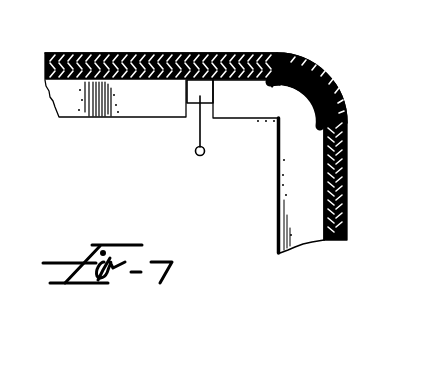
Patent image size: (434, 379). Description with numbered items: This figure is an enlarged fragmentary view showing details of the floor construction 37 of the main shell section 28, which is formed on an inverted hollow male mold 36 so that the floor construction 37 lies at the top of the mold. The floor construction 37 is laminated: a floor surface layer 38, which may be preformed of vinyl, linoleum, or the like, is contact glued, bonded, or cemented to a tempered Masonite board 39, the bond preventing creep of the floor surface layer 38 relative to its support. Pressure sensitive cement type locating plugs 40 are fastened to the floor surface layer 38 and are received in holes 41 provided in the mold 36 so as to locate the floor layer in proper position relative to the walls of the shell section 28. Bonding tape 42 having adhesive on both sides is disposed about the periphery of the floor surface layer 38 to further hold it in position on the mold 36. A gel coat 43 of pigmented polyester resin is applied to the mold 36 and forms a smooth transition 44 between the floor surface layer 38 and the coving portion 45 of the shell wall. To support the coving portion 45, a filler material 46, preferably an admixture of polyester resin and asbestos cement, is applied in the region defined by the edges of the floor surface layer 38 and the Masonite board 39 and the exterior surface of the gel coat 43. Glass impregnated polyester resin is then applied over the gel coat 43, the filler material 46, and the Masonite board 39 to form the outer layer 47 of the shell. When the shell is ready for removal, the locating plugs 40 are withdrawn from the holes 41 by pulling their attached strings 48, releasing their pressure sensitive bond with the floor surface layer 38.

The main shell section 28 is at (347, 197).
The inverted hollow male mold 36 is at (282, 206).
The floor construction 37 is at (142, 50).
The floor surface layer 38 is at (227, 80).
The tempered Masonite board 39 is at (240, 52).
The locating plug 40 is at (197, 103).
The hole 41 is at (186, 96).
The bonding tape 42 is at (258, 80).
The gel coat 43 is at (325, 177).
The transition 44 is at (278, 81).
The coving portion 45 is at (313, 94).
The filler material 46 is at (307, 63).
The outer layer 47 is at (348, 121).
The string 48 is at (211, 141).